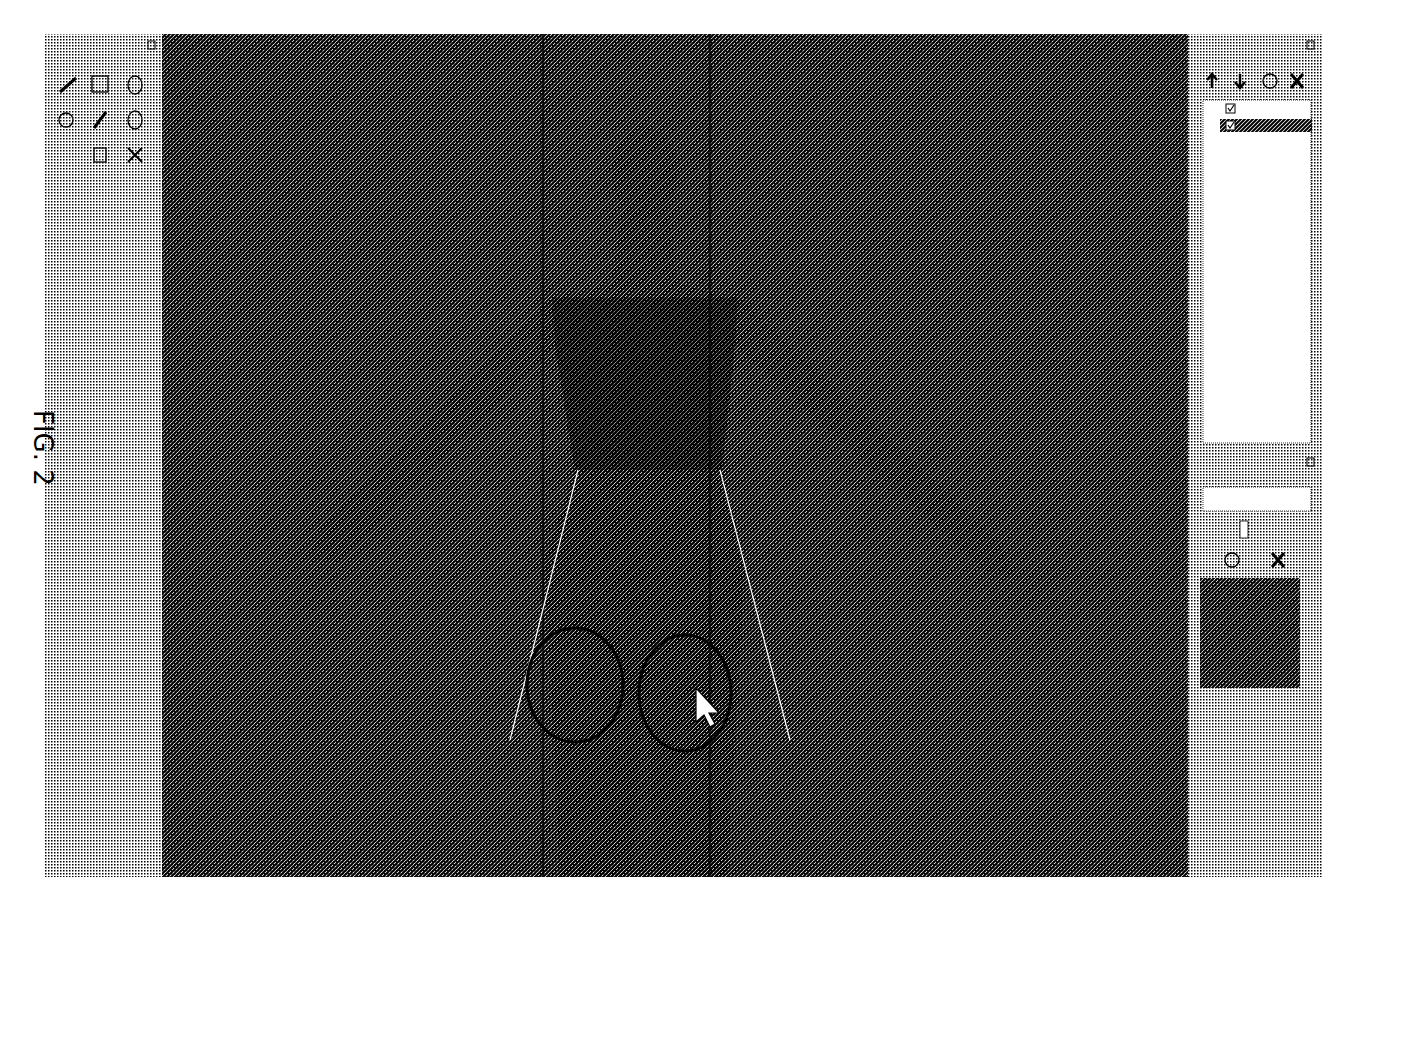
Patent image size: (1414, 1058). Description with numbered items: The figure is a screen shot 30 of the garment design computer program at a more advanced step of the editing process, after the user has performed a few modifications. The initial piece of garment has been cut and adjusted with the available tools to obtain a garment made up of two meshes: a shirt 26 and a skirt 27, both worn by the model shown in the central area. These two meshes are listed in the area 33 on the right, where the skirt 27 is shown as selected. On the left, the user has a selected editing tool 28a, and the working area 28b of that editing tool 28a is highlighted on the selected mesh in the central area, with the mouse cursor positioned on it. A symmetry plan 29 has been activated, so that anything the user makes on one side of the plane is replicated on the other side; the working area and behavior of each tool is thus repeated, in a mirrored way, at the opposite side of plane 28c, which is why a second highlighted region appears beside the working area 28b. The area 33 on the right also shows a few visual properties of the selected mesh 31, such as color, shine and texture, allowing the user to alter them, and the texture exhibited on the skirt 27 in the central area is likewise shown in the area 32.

The screen shot 30 is at (1060, 881).
The symmetry plan 29 is at (700, 171).
The shirt 26 is at (680, 432).
The skirt 27 is at (702, 584).
The editing tool 28a is at (122, 95).
The working area of editing tool 28b is at (701, 696).
The opposite side of plane 28c is at (578, 688).
The area on the right 33 is at (1301, 156).
The selected mesh visual properties 31 is at (1301, 472).
The texture area 32 is at (1254, 648).